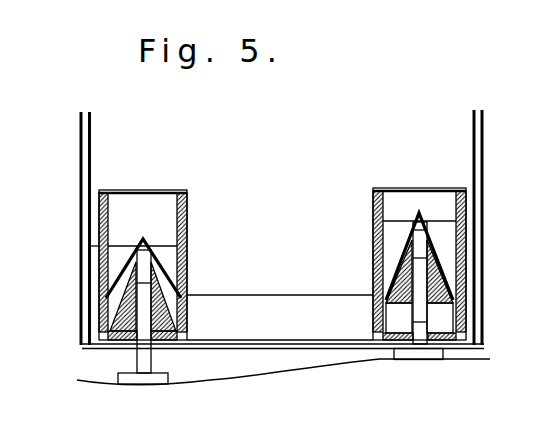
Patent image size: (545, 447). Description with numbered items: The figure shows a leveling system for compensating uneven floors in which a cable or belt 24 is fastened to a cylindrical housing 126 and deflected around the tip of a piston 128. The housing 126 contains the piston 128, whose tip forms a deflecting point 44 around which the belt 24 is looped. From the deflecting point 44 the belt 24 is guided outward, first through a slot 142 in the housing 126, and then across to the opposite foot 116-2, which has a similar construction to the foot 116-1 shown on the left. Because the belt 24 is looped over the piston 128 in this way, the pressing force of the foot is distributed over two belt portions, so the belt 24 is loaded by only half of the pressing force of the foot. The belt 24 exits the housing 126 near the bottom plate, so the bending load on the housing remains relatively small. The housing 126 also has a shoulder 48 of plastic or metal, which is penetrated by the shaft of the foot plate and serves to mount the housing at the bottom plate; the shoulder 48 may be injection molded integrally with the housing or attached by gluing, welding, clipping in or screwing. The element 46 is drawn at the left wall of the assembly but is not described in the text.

The belt 24 is at (292, 294).
The deflecting point 44 is at (144, 244).
The frame wall 46 is at (124, 267).
The shoulder 48 is at (153, 258).
The housing 126 is at (188, 262).
The piston 128 is at (183, 291).
The slot 142 is at (183, 305).
The first foot 116-1 is at (153, 383).
The opposite foot 116-2 is at (422, 360).